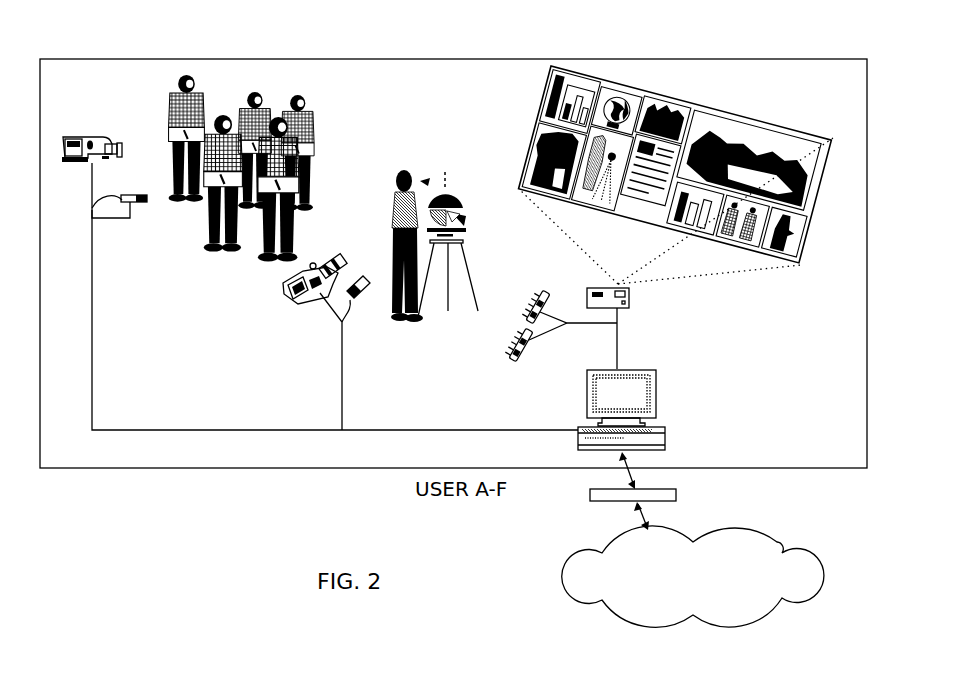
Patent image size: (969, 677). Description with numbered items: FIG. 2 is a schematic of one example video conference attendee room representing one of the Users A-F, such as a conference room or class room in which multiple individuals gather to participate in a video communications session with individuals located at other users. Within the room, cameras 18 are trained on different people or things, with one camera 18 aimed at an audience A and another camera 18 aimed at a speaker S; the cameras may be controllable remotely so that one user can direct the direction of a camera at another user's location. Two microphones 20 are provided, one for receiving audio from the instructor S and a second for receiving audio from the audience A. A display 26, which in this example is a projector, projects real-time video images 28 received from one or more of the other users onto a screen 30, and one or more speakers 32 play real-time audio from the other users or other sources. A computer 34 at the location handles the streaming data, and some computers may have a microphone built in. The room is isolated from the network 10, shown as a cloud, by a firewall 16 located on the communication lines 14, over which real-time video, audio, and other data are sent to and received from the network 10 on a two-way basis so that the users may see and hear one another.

The network 10 is at (778, 540).
The communication lines 14 is at (636, 486).
The firewall 16 is at (590, 494).
The camera 18 is at (91, 135).
The microphone 20 is at (95, 204).
The display 26 is at (630, 299).
The real-time video images 28 is at (540, 118).
The screen 30 is at (770, 122).
The speaker 32 is at (545, 293).
The computer 34 is at (667, 426).
The audience A is at (229, 74).
The speaker S is at (410, 147).